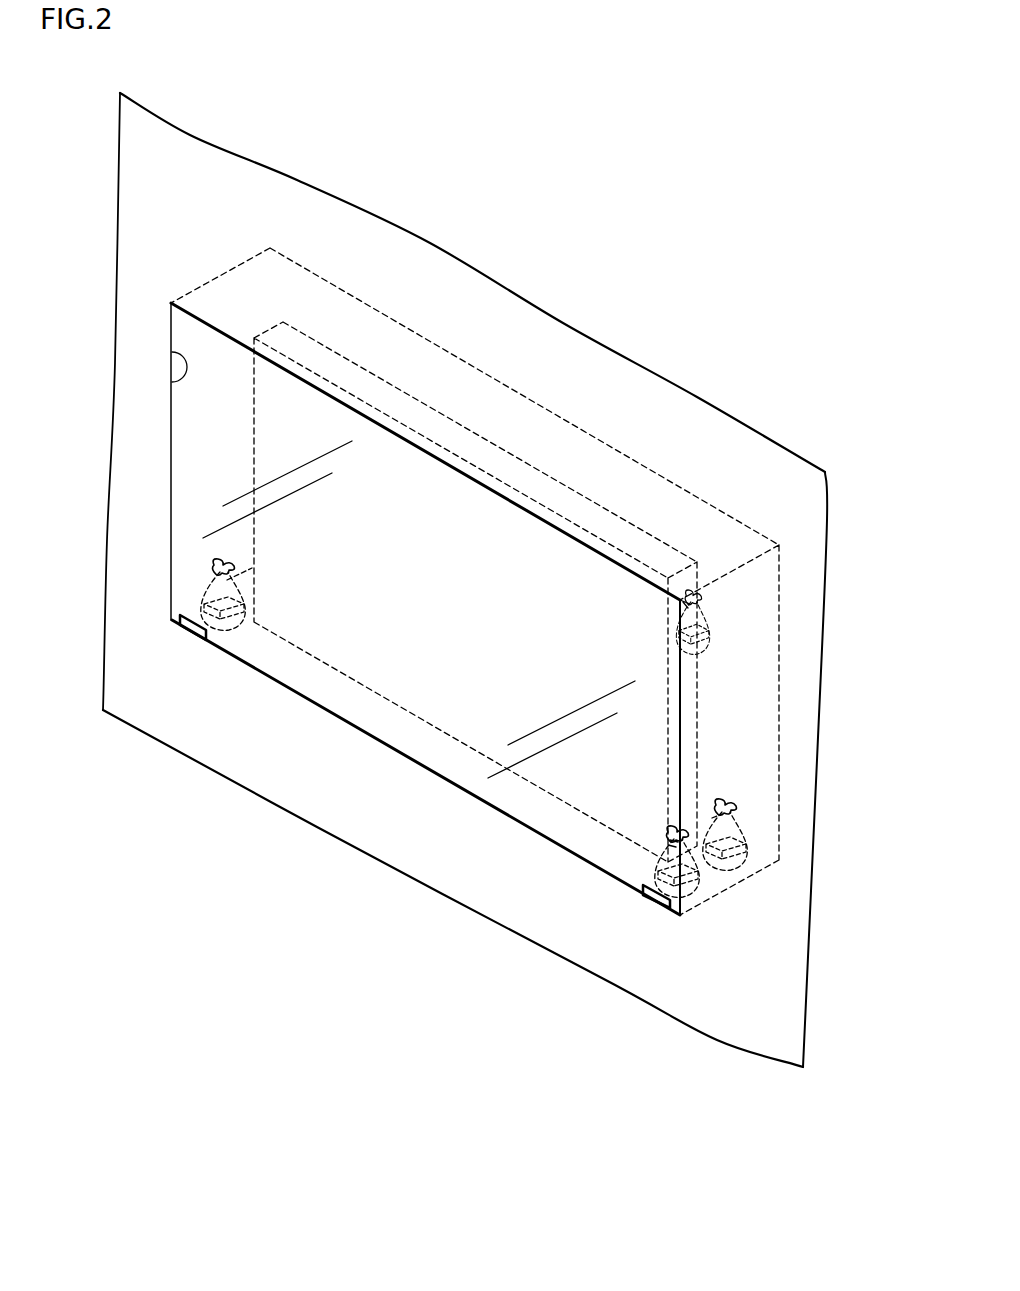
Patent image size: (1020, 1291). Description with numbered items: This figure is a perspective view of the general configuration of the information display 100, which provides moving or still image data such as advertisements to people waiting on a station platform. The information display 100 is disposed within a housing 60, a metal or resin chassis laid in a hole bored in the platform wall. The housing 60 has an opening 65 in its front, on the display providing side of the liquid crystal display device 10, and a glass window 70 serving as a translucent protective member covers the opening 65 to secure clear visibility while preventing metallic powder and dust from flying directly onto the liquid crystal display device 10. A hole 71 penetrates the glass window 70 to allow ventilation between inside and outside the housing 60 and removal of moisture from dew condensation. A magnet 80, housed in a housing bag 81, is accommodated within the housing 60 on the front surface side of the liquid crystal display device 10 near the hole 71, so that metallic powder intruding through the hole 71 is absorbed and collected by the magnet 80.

The liquid crystal display device 10 is at (688, 722).
The housing 60 is at (263, 283).
The opening 65 is at (190, 372).
The glass window 70 is at (197, 470).
The hole 71 is at (190, 633).
The magnet 80 is at (496, 733).
The housing bag 81 is at (710, 643).
The information display 100 is at (690, 313).